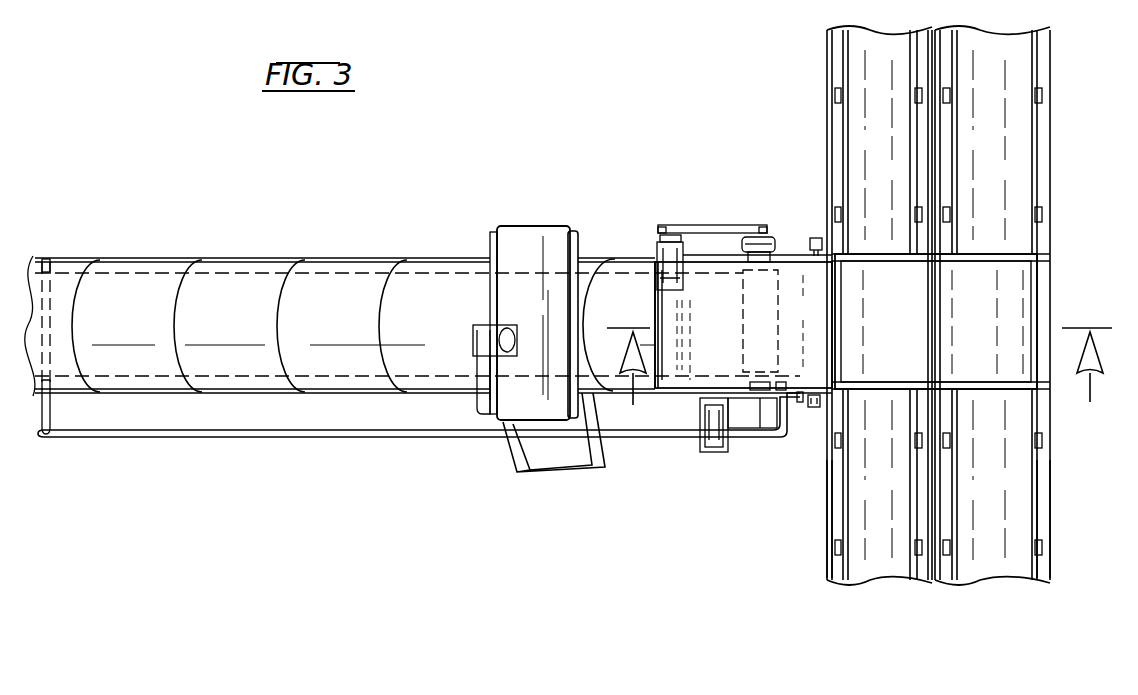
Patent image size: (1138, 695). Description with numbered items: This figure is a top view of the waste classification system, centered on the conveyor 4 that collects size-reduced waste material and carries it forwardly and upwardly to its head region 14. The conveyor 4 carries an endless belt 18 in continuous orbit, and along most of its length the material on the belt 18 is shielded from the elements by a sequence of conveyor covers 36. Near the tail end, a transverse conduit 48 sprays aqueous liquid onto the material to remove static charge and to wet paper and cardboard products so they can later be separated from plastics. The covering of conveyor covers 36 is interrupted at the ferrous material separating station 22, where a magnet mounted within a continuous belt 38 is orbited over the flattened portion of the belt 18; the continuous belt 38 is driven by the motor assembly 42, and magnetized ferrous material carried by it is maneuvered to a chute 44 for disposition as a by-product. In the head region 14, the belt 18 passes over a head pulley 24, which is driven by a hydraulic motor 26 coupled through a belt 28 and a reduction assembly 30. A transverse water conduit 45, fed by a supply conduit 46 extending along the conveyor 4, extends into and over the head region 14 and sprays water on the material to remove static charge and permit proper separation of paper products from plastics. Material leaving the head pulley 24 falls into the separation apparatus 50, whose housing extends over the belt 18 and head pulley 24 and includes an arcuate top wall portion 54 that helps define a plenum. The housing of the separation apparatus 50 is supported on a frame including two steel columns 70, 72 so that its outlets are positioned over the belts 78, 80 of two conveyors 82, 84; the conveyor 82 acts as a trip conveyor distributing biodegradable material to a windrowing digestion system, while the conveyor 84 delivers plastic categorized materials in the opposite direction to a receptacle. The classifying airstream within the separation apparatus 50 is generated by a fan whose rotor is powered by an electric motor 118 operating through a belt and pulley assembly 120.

The conveyor 4 is at (375, 243).
The head region 14 is at (656, 213).
The endless belt 18 is at (690, 376).
The ferrous material separating station 22 is at (559, 210).
The head pulley 24 is at (775, 334).
The hydraulic motor 26 is at (665, 250).
The belt 28 is at (715, 224).
The reduction assembly 30 is at (770, 236).
The conveyor covers 36 is at (150, 268).
The continuous belt 38 is at (523, 228).
The motor assembly 42 is at (472, 406).
The chute 44 is at (555, 462).
The transverse water conduit 45 is at (785, 414).
The supply conduit 46 is at (665, 434).
The transverse conduit 48 is at (47, 262).
The separation apparatus 50 is at (805, 462).
The top wall portion 54 is at (1010, 281).
The steel column 70 is at (815, 410).
The steel column 72 is at (815, 238).
The belt 78 is at (880, 45).
The belt 80 is at (985, 45).
The conveyor 82 is at (886, 584).
The conveyor 84 is at (1001, 584).
The electric motor 118 is at (712, 455).
The belt and pulley assembly 120 is at (750, 412).